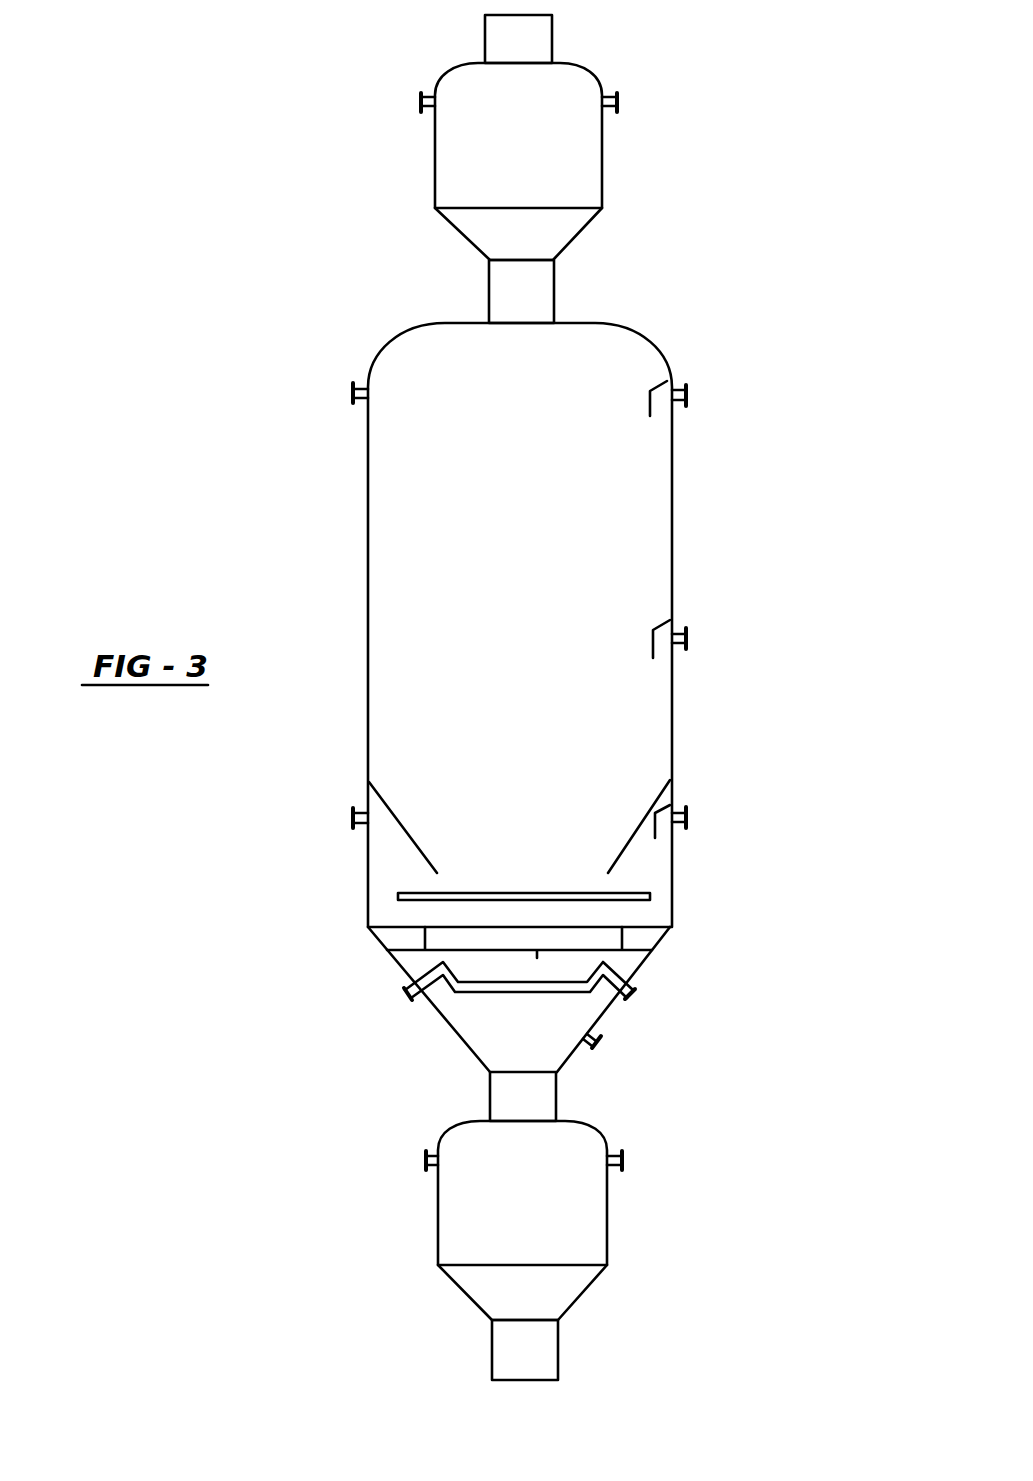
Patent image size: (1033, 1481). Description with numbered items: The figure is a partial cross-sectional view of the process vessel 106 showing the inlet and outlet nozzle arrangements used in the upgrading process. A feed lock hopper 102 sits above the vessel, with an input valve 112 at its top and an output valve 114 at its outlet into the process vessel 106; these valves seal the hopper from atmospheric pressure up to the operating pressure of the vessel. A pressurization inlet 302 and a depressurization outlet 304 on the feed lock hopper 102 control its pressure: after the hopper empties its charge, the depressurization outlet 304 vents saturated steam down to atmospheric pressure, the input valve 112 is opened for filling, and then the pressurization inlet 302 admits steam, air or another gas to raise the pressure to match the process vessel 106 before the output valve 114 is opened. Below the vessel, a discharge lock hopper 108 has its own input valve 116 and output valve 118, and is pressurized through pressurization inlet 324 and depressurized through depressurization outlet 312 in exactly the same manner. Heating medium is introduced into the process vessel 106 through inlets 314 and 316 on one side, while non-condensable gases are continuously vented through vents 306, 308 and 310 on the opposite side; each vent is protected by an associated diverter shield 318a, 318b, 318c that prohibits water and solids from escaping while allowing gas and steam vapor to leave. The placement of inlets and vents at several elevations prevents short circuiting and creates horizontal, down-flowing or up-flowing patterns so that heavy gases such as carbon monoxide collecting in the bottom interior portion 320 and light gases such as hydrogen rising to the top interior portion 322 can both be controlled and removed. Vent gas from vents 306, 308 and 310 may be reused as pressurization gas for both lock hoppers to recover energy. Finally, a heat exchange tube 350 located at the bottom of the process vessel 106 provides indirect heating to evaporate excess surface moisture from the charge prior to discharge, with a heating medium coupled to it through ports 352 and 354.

The input valve 112 is at (552, 36).
The feed lock hopper 102 is at (602, 170).
The pressurization inlet 302 is at (421, 110).
The depressurization outlet 304 is at (619, 108).
The output valve 114 is at (554, 295).
The process vessel 106 is at (368, 563).
The inlet 314 is at (353, 400).
The vent 306 is at (688, 390).
The vent 308 is at (688, 638).
The vent 310 is at (688, 817).
The inlet 316 is at (353, 816).
The diverter shield 318a is at (648, 400).
The diverter shield 318b is at (650, 642).
The diverter shield 318c is at (655, 835).
The top interior portion 322 is at (517, 538).
The bottom interior portion 320 is at (540, 1035).
The heat exchange tube 350 is at (500, 982).
The port 352 is at (410, 995).
The port 354 is at (633, 997).
The input valve 116 is at (490, 1092).
The discharge lock hopper 108 is at (438, 1233).
The pressurization inlet 324 is at (427, 1167).
The depressurization outlet 312 is at (622, 1157).
The output valve 118 is at (558, 1348).